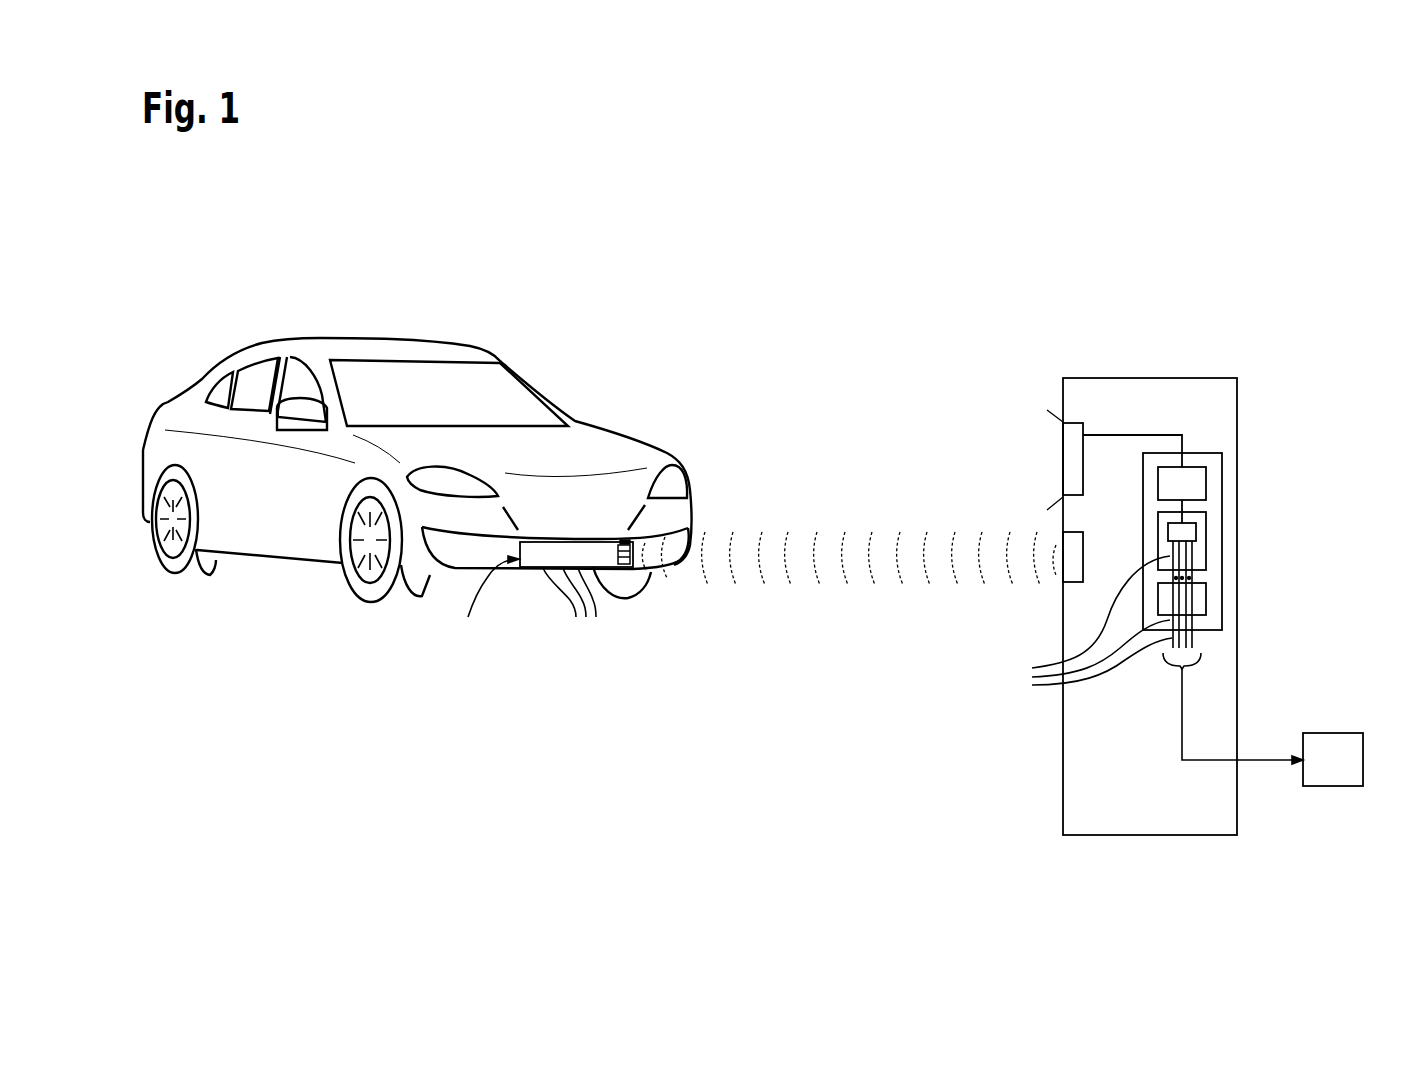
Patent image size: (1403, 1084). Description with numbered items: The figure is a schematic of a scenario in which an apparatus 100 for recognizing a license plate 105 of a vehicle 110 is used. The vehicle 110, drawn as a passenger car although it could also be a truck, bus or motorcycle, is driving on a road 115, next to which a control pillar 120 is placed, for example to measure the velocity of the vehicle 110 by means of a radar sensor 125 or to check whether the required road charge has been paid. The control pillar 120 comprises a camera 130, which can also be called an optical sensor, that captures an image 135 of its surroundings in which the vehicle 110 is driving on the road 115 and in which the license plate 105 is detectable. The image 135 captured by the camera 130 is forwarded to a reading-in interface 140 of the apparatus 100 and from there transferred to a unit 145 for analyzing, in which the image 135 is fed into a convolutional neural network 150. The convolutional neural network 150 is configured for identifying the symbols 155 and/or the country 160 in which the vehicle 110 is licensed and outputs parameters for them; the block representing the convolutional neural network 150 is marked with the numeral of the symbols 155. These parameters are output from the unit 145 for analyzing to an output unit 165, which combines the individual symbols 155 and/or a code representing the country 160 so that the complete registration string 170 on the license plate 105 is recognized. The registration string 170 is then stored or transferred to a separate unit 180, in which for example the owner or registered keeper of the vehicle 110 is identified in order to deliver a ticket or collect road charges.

The apparatus 100 is at (1200, 453).
The license plate 105 is at (533, 568).
The vehicle 110 is at (403, 335).
The road 115 is at (798, 681).
The control pillar 120 is at (1222, 378).
The radar sensor 125 is at (1074, 584).
The camera 130 is at (1073, 423).
The image 135 is at (1157, 435).
The reading-in interface 140 is at (1206, 480).
The unit for analyzing 145 is at (1206, 557).
The convolutional neural network 150 is at (1196, 532).
The symbols 155 is at (1270, 648).
The country 160 is at (635, 568).
The output unit 165 is at (1206, 598).
The registration string 170 is at (1270, 877).
The separate unit 180 is at (1333, 786).